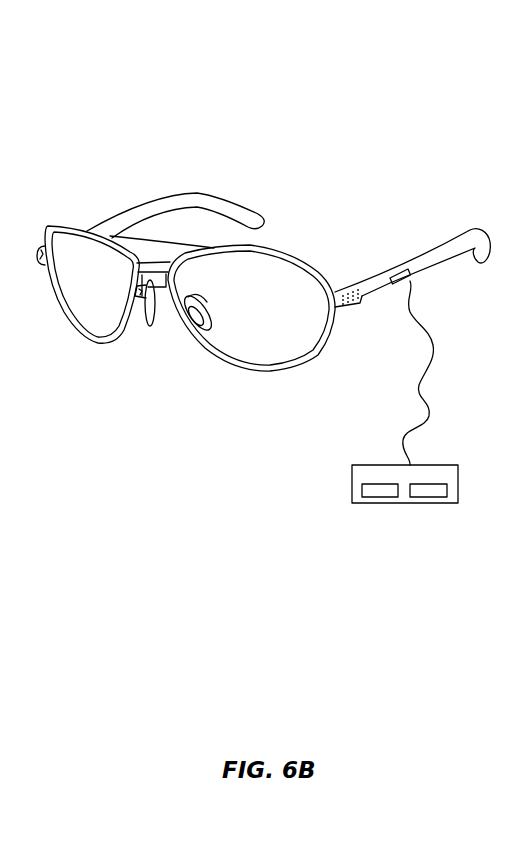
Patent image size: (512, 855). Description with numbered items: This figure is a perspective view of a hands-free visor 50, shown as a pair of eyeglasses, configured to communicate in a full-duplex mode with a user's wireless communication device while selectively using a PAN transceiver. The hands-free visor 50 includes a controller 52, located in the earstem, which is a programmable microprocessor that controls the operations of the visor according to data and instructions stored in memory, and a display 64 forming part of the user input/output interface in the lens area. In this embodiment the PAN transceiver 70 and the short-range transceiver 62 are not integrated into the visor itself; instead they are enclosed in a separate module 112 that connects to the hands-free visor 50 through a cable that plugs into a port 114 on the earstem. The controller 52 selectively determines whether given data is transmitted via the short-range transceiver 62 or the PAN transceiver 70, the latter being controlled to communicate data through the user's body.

The hands-free visor 50 is at (263, 212).
The controller 52 is at (350, 305).
The short-range transceiver 62 is at (375, 497).
The display 64 is at (232, 345).
The PAN transceiver 70 is at (430, 497).
The module 112 is at (413, 478).
The port 114 is at (391, 275).